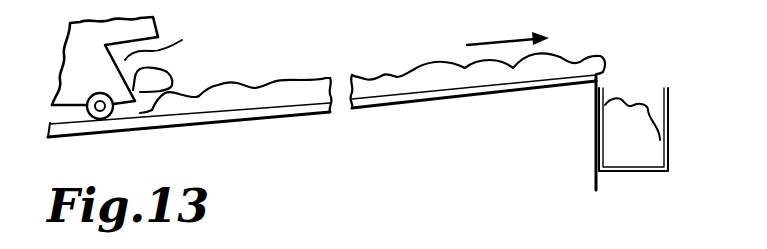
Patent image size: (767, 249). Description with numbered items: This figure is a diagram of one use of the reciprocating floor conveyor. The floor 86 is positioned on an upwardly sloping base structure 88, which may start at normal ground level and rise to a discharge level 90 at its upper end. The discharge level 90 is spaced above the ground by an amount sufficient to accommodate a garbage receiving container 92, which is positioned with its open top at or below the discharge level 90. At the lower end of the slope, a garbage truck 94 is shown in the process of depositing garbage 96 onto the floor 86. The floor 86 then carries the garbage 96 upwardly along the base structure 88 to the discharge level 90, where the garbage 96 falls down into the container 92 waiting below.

The floor 86 is at (227, 123).
The base structure 88 is at (427, 107).
The discharge level 90 is at (605, 73).
The garbage receiving container 92 is at (672, 118).
The garbage truck 94 is at (182, 40).
The garbage 96 is at (393, 88).